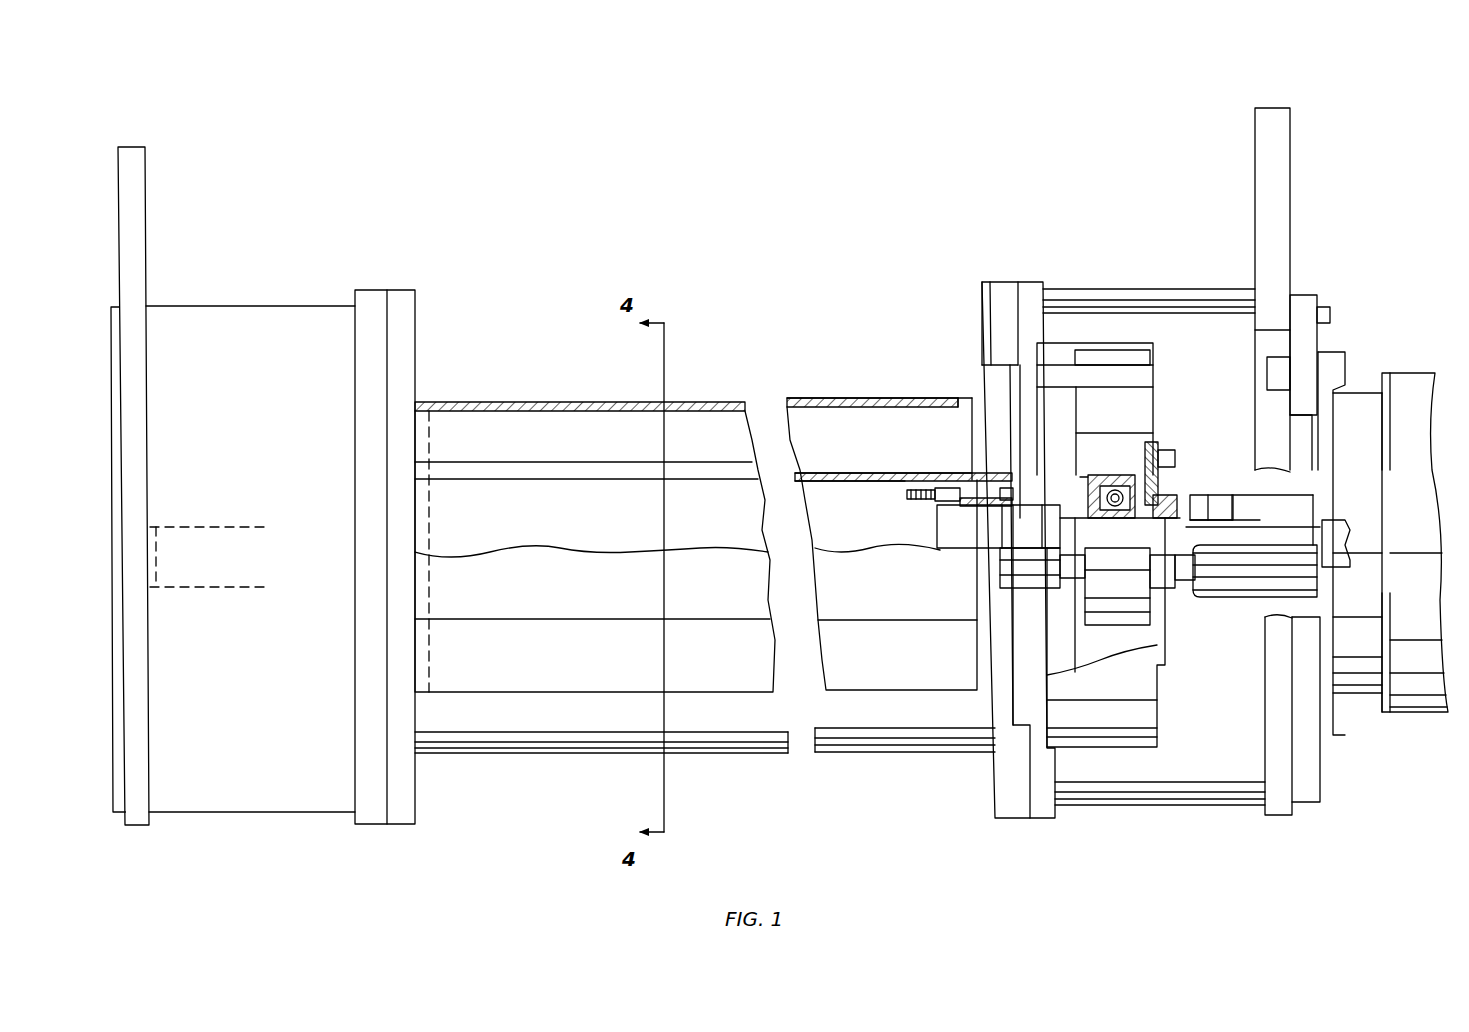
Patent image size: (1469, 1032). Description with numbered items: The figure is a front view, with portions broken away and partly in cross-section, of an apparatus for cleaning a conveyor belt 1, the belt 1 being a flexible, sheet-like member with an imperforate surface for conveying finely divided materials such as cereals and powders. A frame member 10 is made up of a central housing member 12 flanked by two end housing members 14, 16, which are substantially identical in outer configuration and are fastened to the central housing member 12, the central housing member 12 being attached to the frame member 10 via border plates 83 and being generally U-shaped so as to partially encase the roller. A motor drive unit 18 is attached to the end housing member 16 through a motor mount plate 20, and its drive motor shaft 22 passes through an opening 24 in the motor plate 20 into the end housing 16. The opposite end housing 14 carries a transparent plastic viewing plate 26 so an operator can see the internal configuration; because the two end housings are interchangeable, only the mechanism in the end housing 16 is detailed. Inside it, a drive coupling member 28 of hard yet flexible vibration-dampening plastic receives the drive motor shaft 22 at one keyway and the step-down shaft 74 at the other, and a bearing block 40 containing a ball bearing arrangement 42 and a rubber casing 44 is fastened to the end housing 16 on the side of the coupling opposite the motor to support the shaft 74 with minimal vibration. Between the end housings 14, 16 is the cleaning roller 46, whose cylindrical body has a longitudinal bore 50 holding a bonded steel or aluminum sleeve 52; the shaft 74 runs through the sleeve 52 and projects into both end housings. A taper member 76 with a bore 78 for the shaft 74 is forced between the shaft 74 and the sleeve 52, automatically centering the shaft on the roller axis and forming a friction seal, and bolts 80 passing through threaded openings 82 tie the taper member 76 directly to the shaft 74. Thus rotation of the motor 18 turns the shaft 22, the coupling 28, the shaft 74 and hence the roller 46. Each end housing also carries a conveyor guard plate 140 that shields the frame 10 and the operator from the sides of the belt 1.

The conveyor belt 1 is at (828, 398).
The frame member 10 is at (1040, 262).
The central housing member 12 is at (886, 746).
The end housing member 14 is at (233, 308).
The end housing member 16 is at (1127, 297).
The motor drive unit 18 is at (1398, 378).
The motor mount plate 20 is at (1300, 300).
The drive motor shaft 22 is at (1270, 527).
The opening 24 is at (1337, 520).
The transparent plastic viewing plate 26 is at (120, 316).
The drive coupling member 28 is at (1198, 495).
The bearing block 40 is at (1160, 430).
The ball bearing arrangement 42 is at (1162, 488).
The rubber casing 44 is at (1100, 485).
The cleaning roller 46 is at (520, 420).
The bore 50 is at (892, 474).
The sleeve 52 is at (845, 474).
The step-down shaft 74 is at (826, 492).
The taper member 76 is at (1022, 470).
The bore 78 is at (992, 508).
The bolts 80 is at (1016, 496).
The threaded openings 82 is at (935, 504).
The border plates 83 is at (400, 298).
The conveyor guard plate 140 is at (982, 312).